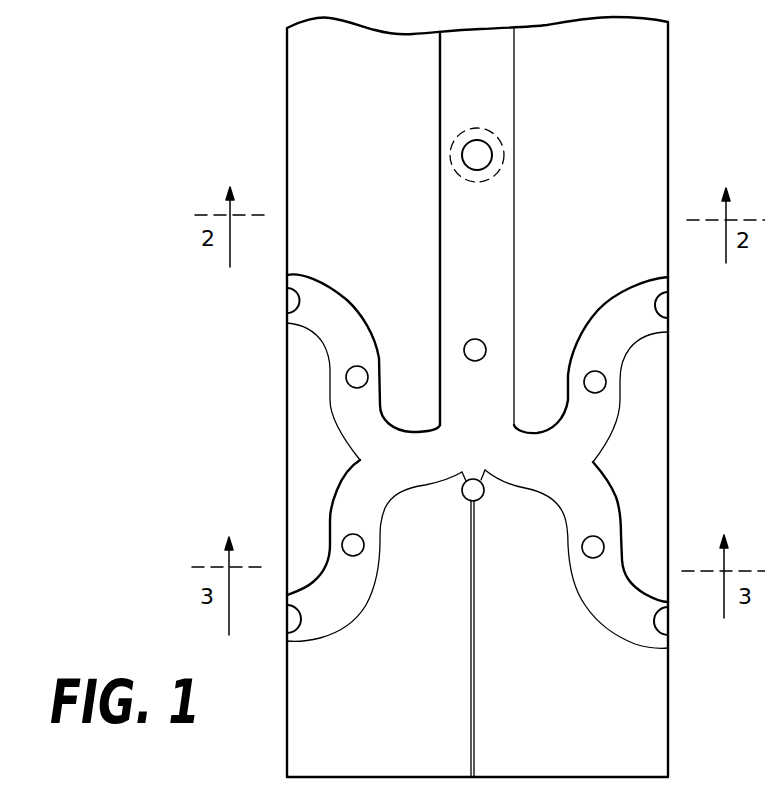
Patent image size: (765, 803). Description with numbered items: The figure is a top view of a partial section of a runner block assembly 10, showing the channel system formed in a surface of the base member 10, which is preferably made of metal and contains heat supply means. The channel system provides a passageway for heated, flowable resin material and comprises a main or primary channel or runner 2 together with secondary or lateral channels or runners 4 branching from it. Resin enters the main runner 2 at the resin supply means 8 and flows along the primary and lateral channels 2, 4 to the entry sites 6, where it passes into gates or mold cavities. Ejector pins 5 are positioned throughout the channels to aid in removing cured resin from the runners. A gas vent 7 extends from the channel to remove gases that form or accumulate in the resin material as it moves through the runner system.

The runner block assembly 10 is at (645, 138).
The main channel 2 is at (498, 229).
The secondary channels 4 is at (337, 512).
The ejector pins 5 is at (593, 377).
The entry sites 6 is at (292, 315).
The gas vent 7 is at (471, 643).
The resin supply means 8 is at (504, 158).